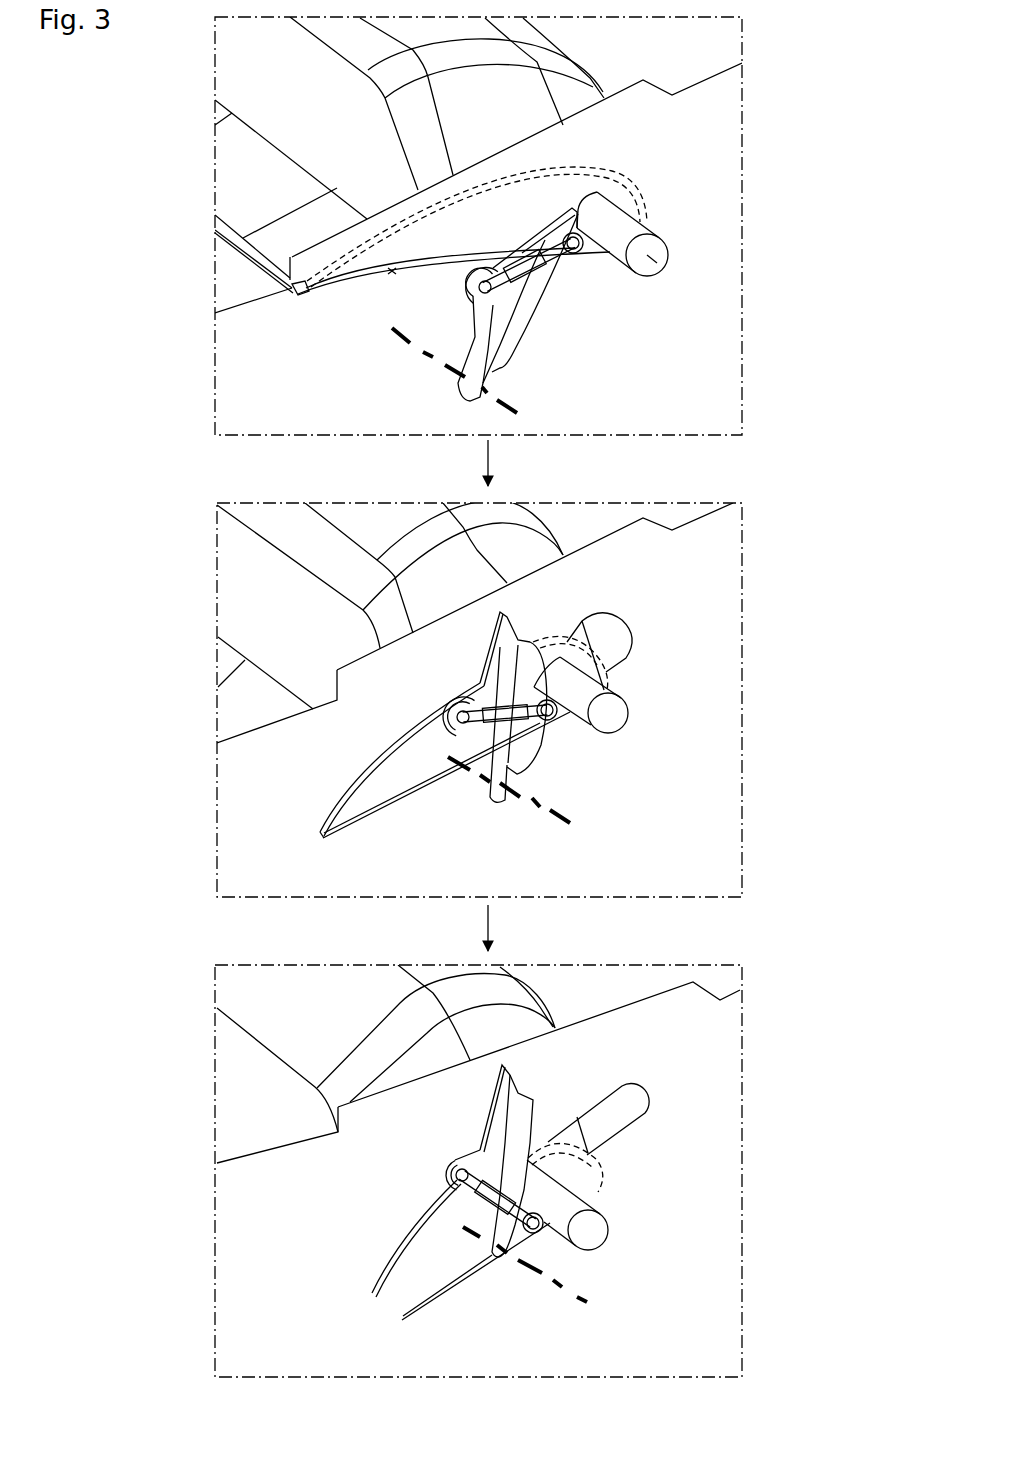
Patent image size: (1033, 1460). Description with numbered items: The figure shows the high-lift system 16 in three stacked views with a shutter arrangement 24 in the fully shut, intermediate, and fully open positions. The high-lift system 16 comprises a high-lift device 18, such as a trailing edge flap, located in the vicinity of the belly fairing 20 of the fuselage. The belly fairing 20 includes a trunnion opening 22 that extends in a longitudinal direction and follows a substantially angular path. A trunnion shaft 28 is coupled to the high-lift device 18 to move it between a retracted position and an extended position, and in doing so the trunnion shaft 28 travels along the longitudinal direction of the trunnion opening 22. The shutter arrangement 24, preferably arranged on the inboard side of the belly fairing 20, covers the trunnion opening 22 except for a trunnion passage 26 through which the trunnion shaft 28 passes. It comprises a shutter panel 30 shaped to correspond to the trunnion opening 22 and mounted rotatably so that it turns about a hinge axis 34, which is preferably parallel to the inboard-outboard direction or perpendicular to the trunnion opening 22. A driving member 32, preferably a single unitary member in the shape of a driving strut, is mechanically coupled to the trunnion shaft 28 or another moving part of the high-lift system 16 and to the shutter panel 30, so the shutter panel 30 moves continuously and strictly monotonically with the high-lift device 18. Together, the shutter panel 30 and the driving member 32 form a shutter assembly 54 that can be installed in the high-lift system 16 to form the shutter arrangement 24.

The high-lift system 16 is at (182, 130).
The high-lift device 18 is at (578, 88).
The belly fairing 20 is at (243, 353).
The trunnion opening 22 is at (615, 635).
The shutter arrangement 24 is at (330, 362).
The trunnion passage 26 is at (643, 218).
The trunnion shaft 28 is at (657, 263).
The shutter panel 30 is at (527, 310).
The driving member 32 is at (523, 257).
The hinge axis 34 is at (518, 415).
The shutter assembly 54 is at (412, 393).